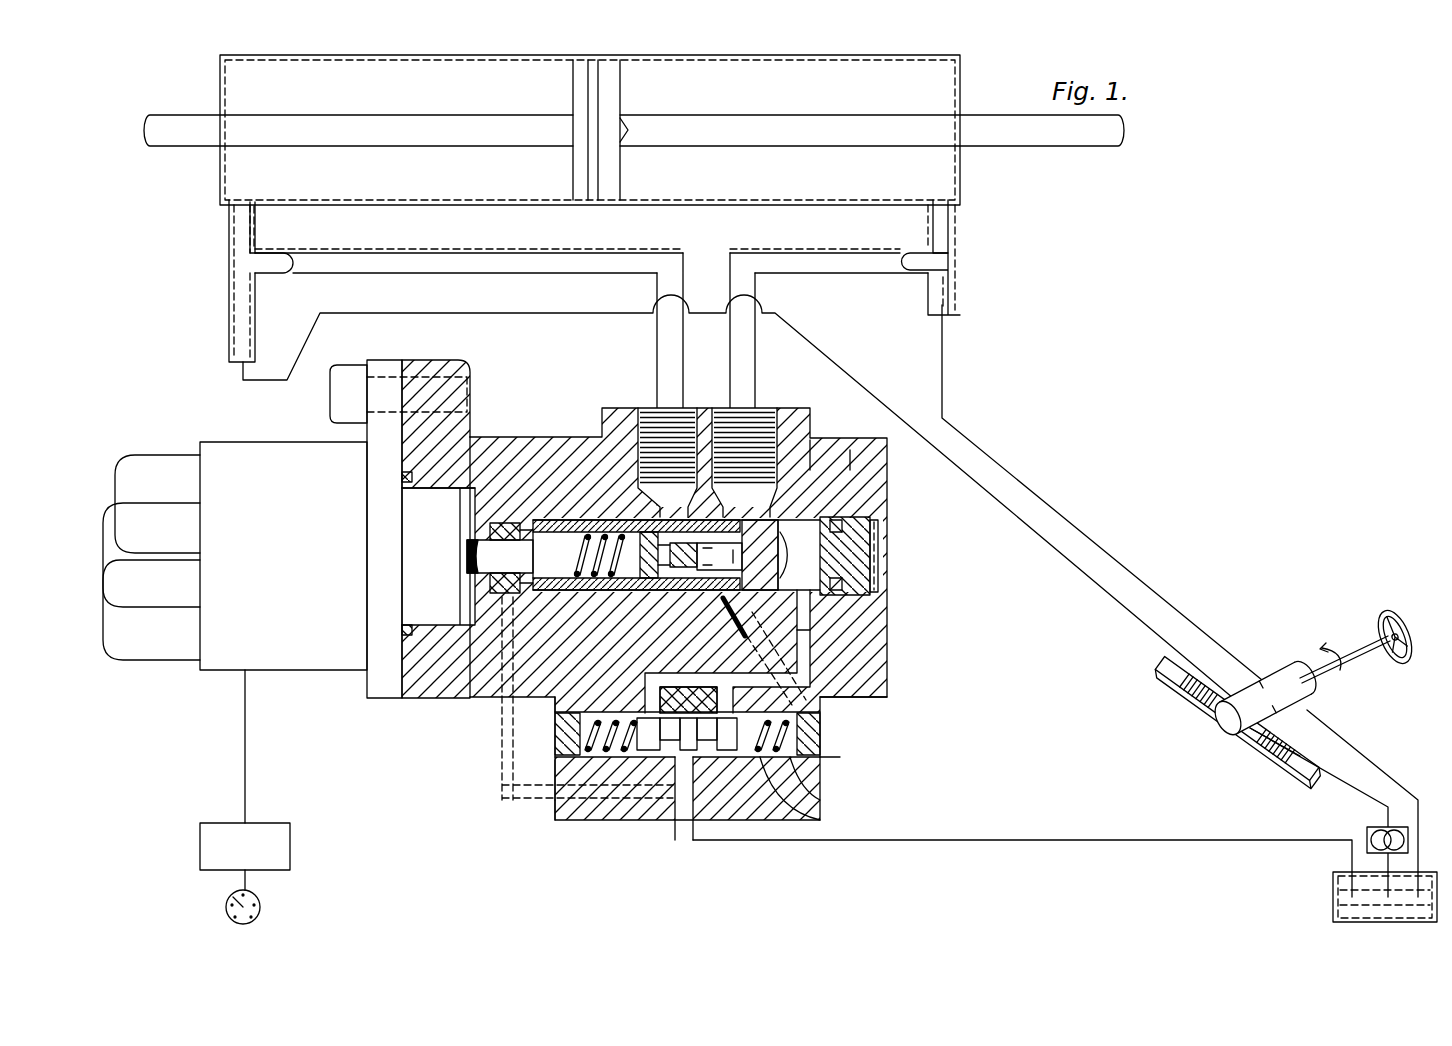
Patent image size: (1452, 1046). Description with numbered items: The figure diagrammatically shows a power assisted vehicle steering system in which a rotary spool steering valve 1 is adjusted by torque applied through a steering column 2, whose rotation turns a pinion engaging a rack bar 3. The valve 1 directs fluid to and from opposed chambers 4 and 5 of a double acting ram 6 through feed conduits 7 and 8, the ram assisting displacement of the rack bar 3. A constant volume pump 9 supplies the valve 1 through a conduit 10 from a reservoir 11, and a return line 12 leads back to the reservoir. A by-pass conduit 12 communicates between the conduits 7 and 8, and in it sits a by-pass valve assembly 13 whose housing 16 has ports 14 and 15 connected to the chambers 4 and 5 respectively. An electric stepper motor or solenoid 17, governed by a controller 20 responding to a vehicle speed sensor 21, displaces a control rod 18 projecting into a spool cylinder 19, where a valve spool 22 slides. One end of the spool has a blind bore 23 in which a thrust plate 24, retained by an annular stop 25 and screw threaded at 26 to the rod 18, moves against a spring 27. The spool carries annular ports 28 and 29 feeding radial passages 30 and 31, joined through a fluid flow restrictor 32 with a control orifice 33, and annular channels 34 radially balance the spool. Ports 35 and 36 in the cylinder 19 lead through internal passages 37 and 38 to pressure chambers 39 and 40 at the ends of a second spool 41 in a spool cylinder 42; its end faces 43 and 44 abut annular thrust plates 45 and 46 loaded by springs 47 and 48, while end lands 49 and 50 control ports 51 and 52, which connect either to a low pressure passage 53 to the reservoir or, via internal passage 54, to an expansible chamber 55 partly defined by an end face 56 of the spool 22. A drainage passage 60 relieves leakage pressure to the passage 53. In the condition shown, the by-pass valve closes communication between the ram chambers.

The steering valve 1 is at (1278, 680).
The steering column 2 is at (1360, 650).
The rack bar 3 is at (1197, 694).
The ram chamber 4 is at (404, 188).
The ram chamber 5 is at (799, 188).
The ram 6 is at (534, 198).
The feed conduit 7 is at (229, 300).
The feed conduit 8 is at (960, 297).
The constant volume pump 9 is at (1366, 830).
The conduit 10 is at (1366, 788).
The reservoir 11 is at (1346, 897).
The by-pass conduit 12 is at (478, 273).
The by-pass valve assembly 13 is at (524, 437).
The port 14 is at (690, 480).
The port 15 is at (790, 520).
The housing 16 is at (852, 470).
The solenoid 17 is at (307, 655).
The control rod 18 is at (475, 548).
The spool cylinder 19 is at (500, 540).
The controller 20 is at (230, 862).
The vehicle speed sensor 21 is at (260, 907).
The valve spool 22 is at (562, 518).
The blind bore 23 is at (505, 595).
The thrust plate 24 is at (520, 600).
The annular stop 25 is at (440, 640).
The screw threaded connection 26 is at (550, 552).
The spring 27 is at (587, 518).
The annular port 28 is at (620, 518).
The annular port 29 is at (722, 545).
The fluid passage 30 is at (645, 530).
The passage 31 is at (750, 540).
The fluid flow restrictor 32 is at (845, 555).
The control orifice 33 is at (693, 540).
The annular channels 34 is at (760, 600).
The port 35 is at (565, 735).
The port 36 is at (798, 622).
The internal passage 37 is at (555, 790).
The internal passage 38 is at (850, 693).
The pressure chamber 39 is at (578, 765).
The pressure chamber 40 is at (828, 757).
The second spool 41 is at (712, 760).
The spool cylinder 42 is at (735, 760).
The end face 43 is at (640, 760).
The end face 44 is at (822, 803).
The annular thrust plate 45 is at (605, 760).
The annular thrust plate 46 is at (810, 738).
The spring 47 is at (575, 815).
The spring 48 is at (820, 778).
The end land 49 is at (665, 760).
The end land 50 is at (775, 760).
The port 51 is at (688, 760).
The port 52 is at (780, 700).
The low pressure passage 53 is at (697, 845).
The internal passage 54 is at (805, 640).
The expansible chamber 55 is at (838, 530).
The end face 56 is at (826, 470).
The drainage passage 60 is at (502, 760).